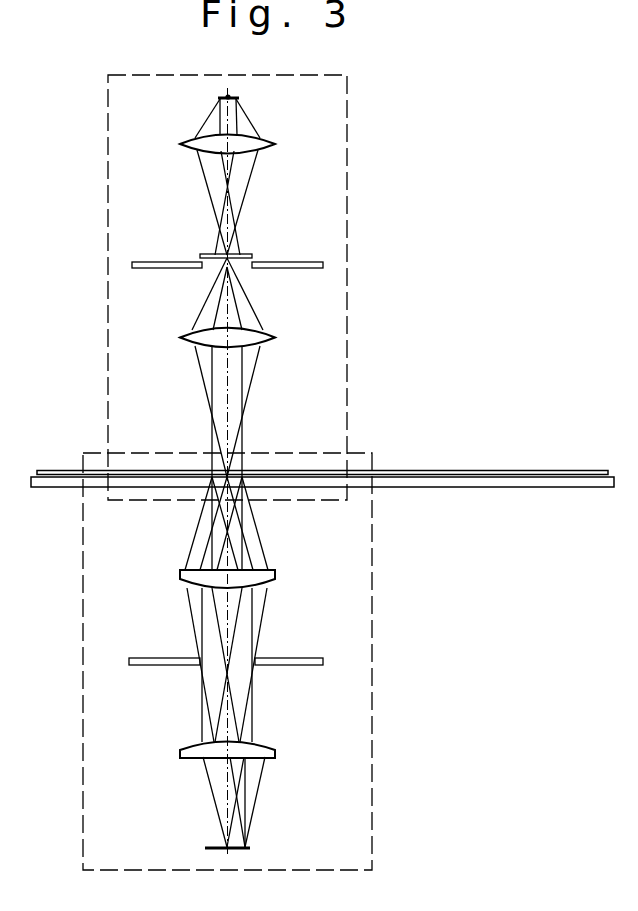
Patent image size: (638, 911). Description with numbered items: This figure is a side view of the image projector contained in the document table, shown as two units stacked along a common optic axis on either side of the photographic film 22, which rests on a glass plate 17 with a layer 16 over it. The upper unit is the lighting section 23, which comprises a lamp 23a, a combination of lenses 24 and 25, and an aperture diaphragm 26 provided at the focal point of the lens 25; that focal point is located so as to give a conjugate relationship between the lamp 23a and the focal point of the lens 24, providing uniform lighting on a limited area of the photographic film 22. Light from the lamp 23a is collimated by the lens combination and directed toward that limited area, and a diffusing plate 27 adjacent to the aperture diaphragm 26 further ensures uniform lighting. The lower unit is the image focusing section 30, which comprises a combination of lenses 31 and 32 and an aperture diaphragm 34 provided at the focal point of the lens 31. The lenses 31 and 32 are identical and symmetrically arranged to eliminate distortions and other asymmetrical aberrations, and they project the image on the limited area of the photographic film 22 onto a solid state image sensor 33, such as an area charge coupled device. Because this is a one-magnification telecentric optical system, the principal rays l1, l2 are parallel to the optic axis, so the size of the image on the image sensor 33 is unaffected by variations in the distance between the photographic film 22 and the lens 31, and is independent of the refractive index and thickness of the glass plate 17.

The transparent protective layer of disc 16 is at (504, 470).
The glass plate 17 is at (483, 487).
The photographic film 22 is at (322, 471).
The lighting section 23 is at (349, 126).
The lamp 23a is at (229, 97).
The lens 24 is at (272, 337).
The lens 25 is at (264, 140).
The aperture diaphragm 26 is at (288, 269).
The diffusing plate 27 is at (253, 254).
The image focusing section 30 is at (373, 745).
The lens 31 is at (275, 578).
The lens 32 is at (276, 752).
The solid state image sensor 33 is at (250, 848).
The aperture diaphragm 34 is at (297, 665).
The principal ray l1 is at (212, 518).
The principal ray l2 is at (243, 521).